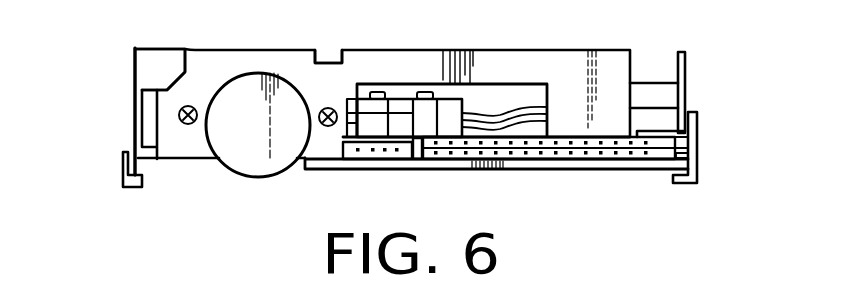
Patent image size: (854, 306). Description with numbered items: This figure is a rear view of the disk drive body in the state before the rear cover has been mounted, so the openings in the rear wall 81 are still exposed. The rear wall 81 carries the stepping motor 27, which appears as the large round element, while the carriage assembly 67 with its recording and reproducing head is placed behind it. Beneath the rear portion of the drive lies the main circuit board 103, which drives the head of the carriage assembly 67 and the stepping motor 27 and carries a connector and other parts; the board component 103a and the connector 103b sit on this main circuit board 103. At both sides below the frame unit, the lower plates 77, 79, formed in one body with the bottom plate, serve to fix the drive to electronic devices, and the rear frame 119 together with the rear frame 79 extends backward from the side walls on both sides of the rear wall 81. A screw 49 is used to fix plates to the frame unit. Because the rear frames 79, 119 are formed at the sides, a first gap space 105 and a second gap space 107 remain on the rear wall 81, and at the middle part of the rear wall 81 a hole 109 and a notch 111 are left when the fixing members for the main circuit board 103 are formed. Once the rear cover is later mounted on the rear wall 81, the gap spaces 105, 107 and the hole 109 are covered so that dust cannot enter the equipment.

The stepping motor 27 is at (222, 86).
The screw 49 is at (188, 124).
The carriage assembly 67 is at (400, 99).
The lower plate 77 is at (122, 162).
The lower plate 79 is at (698, 157).
The rear wall 81 is at (480, 49).
The main circuit board 103 is at (522, 172).
The circuit board component 103a is at (390, 152).
The connector 103b is at (543, 143).
The first gap space 105 is at (658, 82).
The second gap space 107 is at (137, 103).
The hole 109 is at (530, 93).
The notch 111 is at (327, 62).
The rear frame 119 is at (150, 105).